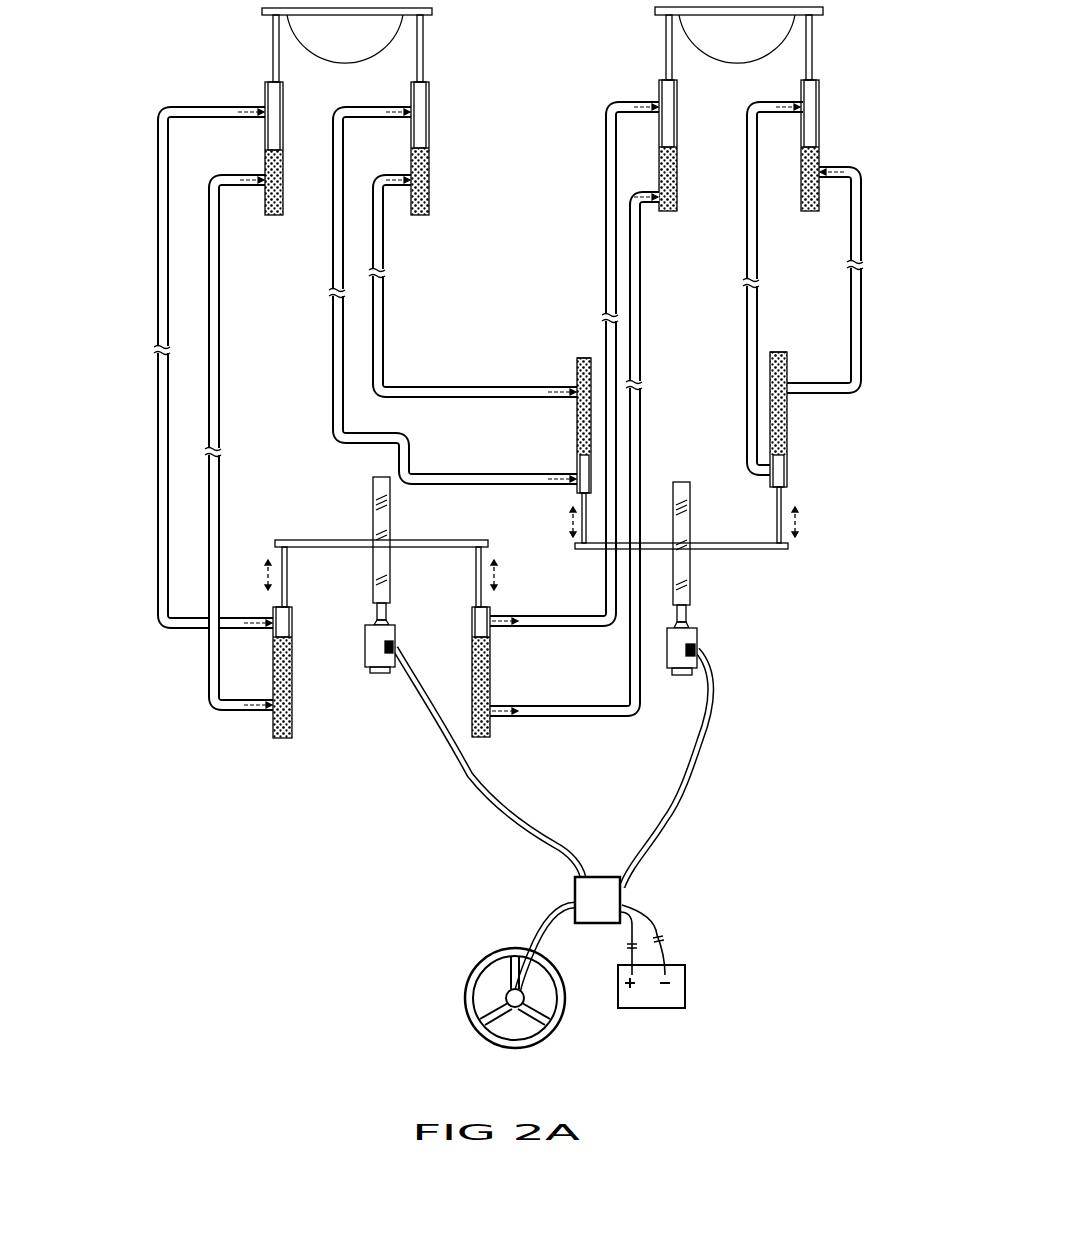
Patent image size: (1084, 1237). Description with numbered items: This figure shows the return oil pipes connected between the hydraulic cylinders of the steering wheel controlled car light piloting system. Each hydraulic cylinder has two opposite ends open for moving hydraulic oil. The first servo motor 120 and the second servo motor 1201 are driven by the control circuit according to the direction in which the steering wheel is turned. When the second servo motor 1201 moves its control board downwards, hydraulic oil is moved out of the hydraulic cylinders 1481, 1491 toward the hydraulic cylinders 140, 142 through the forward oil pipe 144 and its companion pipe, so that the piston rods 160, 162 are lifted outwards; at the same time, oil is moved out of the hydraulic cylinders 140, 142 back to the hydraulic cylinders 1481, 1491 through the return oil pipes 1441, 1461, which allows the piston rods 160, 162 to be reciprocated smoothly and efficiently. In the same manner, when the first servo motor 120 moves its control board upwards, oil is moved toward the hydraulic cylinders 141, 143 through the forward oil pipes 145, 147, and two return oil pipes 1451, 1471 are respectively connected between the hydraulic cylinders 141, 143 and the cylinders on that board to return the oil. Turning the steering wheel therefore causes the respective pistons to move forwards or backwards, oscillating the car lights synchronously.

The piston rod 160 is at (273, 31).
The piston rod 162 is at (666, 32).
The hydraulic cylinder 140 is at (265, 95).
The hydraulic cylinder 141 is at (423, 133).
The hydraulic cylinder 142 is at (660, 88).
The hydraulic cylinder 143 is at (818, 125).
The return oil pipe 1441 is at (160, 206).
The forward oil pipe 144 is at (215, 316).
The return oil pipe 1451 is at (333, 229).
The forward oil pipe 145 is at (382, 341).
The return oil pipe 1461 is at (609, 201).
The return oil pipe 1471 is at (748, 345).
The forward oil pipe 147 is at (858, 222).
The hydraulic cylinder 1481 is at (280, 741).
The hydraulic cylinder 1491 is at (482, 731).
The first servo motor 120 is at (692, 640).
The second servo motor 1201 is at (373, 655).